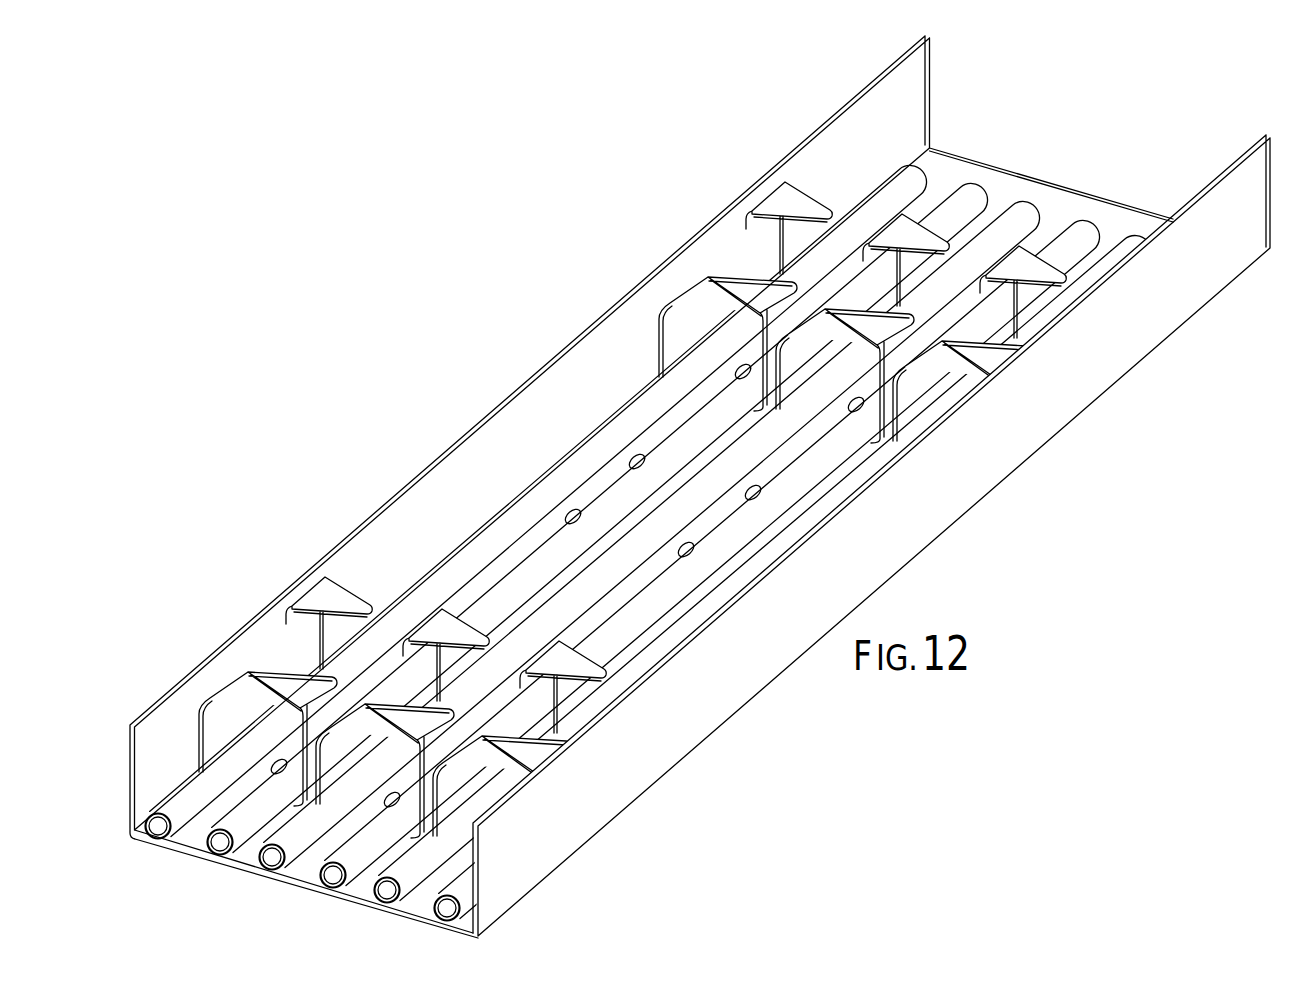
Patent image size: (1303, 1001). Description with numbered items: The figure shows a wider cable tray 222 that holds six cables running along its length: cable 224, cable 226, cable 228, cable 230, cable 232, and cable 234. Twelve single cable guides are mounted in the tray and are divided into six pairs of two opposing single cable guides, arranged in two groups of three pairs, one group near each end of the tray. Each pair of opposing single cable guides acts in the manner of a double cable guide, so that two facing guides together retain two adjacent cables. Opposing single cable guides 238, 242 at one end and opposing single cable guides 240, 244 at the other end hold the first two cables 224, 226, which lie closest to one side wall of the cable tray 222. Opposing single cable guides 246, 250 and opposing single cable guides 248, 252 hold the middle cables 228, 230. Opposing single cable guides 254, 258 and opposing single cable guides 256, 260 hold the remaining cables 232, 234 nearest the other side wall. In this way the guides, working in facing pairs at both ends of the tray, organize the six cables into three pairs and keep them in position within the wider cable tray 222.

The cable tray 222 is at (905, 519).
The cable 224 is at (188, 820).
The cable 226 is at (243, 839).
The cable 228 is at (290, 874).
The cable 230 is at (352, 890).
The cable 232 is at (404, 903).
The cable 234 is at (438, 910).
The single cable guide 238 is at (268, 679).
The single cable guide 240 is at (738, 284).
The single cable guide 242 is at (334, 598).
The single cable guide 244 is at (792, 200).
The single cable guide 246 is at (391, 714).
The single cable guide 248 is at (852, 320).
The single cable guide 250 is at (448, 645).
The single cable guide 252 is at (898, 238).
The single cable guide 254 is at (518, 746).
The single cable guide 256 is at (1003, 352).
The single cable guide 258 is at (584, 668).
The single cable guide 260 is at (1032, 266).